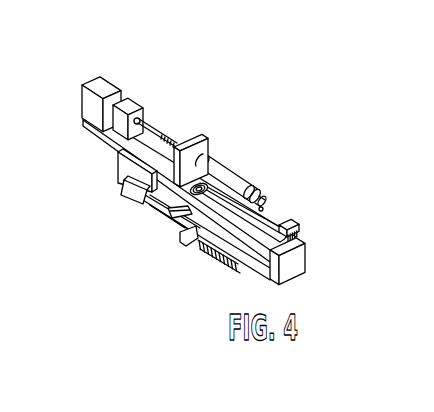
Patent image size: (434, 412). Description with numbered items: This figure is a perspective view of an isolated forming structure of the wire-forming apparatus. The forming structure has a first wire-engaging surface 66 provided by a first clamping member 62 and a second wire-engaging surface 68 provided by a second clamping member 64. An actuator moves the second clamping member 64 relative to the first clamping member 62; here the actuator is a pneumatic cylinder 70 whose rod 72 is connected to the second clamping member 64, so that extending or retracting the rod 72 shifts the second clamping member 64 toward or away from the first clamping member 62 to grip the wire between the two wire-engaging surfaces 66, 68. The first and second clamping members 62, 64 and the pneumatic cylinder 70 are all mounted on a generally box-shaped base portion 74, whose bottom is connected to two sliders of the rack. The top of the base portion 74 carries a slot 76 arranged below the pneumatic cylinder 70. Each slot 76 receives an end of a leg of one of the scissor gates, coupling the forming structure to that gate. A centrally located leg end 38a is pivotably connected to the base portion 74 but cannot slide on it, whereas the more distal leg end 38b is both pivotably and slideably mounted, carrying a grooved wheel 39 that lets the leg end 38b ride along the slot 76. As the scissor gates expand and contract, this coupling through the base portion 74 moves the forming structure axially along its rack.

The first clamping member 62 is at (106, 88).
The second wire-engaging surface 68 is at (127, 101).
The second clamping member 64 is at (150, 117).
The rod 72 is at (168, 139).
The pneumatic cylinder 70 is at (236, 182).
The first wire-engaging surface 66 is at (83, 118).
The centrally located leg end 38a is at (133, 184).
The grooved wheel 39 is at (147, 188).
The distal leg end 38b is at (175, 210).
The base portion 74 is at (183, 234).
The slot 76 is at (228, 228).